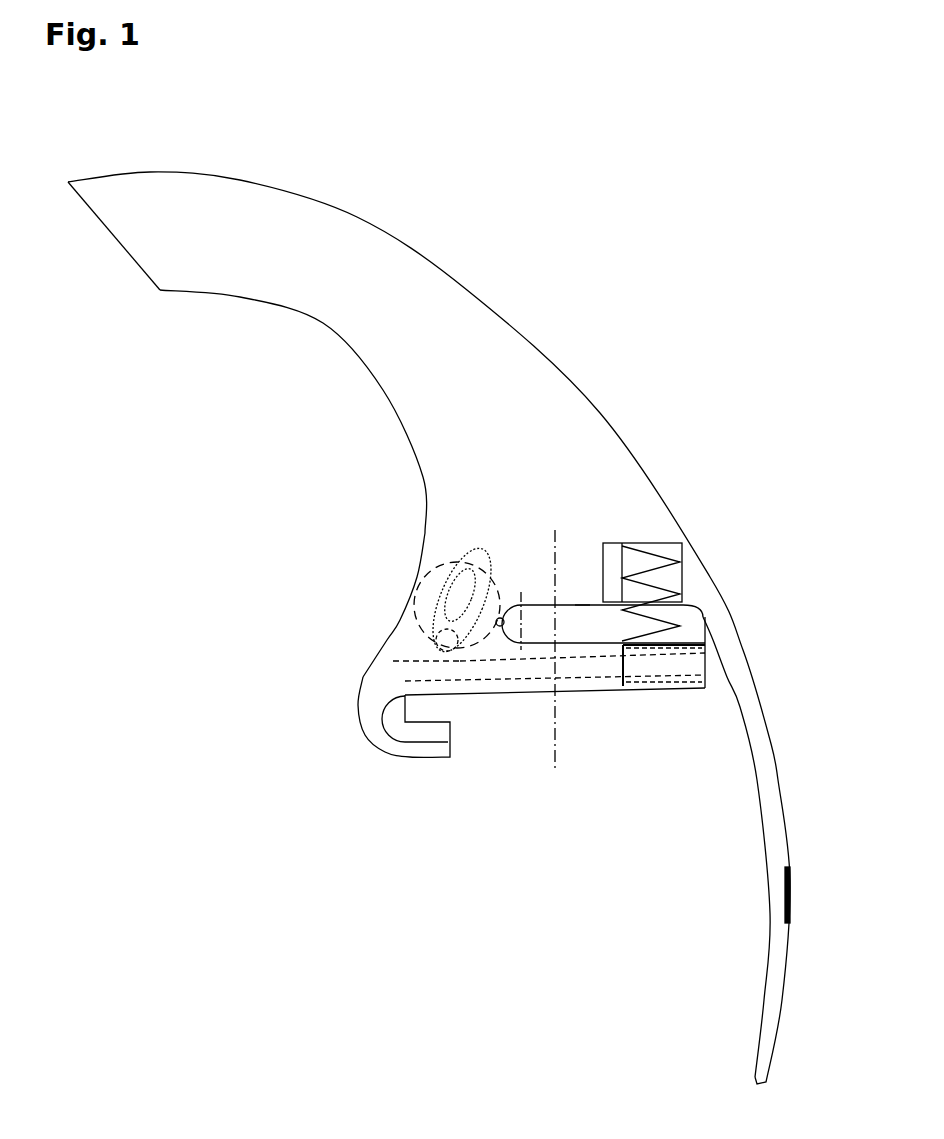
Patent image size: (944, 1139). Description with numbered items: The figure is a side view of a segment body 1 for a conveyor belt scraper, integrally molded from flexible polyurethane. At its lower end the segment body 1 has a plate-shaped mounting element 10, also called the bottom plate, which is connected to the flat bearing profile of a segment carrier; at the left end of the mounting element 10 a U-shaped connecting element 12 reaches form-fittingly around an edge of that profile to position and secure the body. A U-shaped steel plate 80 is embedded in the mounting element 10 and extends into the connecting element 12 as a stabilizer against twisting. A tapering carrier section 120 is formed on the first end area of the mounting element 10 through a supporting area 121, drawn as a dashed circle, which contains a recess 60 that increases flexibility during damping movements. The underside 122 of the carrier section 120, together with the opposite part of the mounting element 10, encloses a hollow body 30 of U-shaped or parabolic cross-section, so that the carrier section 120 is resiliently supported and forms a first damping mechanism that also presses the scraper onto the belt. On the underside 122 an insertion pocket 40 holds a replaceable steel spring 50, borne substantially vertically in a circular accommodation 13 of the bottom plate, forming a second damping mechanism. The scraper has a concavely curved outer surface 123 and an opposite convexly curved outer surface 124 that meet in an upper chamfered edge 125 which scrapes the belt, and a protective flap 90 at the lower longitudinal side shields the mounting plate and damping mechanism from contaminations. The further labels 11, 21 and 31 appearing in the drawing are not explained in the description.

The segment body 1 is at (695, 138).
The mounting element 10 is at (543, 690).
The rod lower surface 11 is at (632, 688).
The connecting element 12 is at (363, 736).
The circular accommodation 13 is at (703, 647).
The cam 21 is at (500, 652).
The hollow body 30 is at (603, 605).
The pin 31 is at (499, 624).
The insertion pocket 40 is at (672, 562).
The steel spring 50 is at (647, 545).
The recess 60 is at (436, 634).
The steel plate 80 is at (668, 673).
The protective flap 90 is at (770, 887).
The carrier section 120 is at (477, 430).
The supporting area 121 is at (418, 625).
The underside 122 is at (582, 605).
The concavely curved outer surface 123 is at (337, 341).
The convexly curved outer surface 124 is at (503, 322).
The upper chamfered edge 125 is at (128, 265).